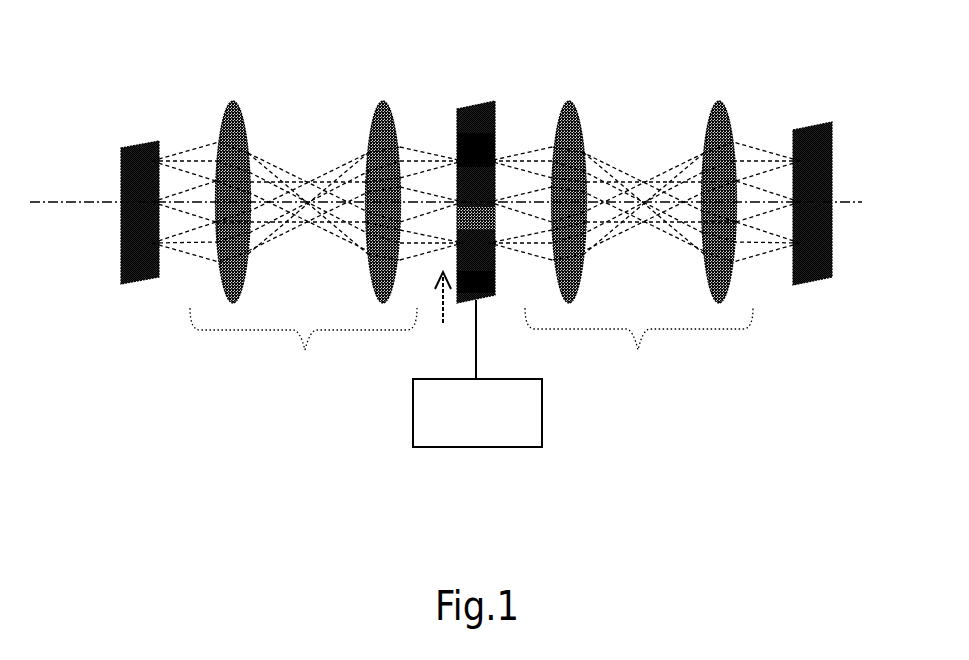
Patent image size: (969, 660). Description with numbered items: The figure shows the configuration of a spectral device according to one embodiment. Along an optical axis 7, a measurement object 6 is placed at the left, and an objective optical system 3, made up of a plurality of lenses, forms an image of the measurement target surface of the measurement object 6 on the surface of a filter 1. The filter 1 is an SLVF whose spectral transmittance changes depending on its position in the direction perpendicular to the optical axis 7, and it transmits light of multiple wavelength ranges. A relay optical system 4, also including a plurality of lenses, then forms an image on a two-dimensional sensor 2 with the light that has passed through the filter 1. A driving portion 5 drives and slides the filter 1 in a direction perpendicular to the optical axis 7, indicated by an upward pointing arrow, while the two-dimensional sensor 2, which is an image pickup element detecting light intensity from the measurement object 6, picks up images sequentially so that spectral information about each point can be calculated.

The filter 1 is at (475, 101).
The two-dimensional sensor 2 is at (812, 128).
The objective optical system 3 is at (303, 248).
The relay optical system 4 is at (639, 248).
The driving portion 5 is at (543, 415).
The measurement object 6 is at (144, 284).
The optical axis 7 is at (62, 200).